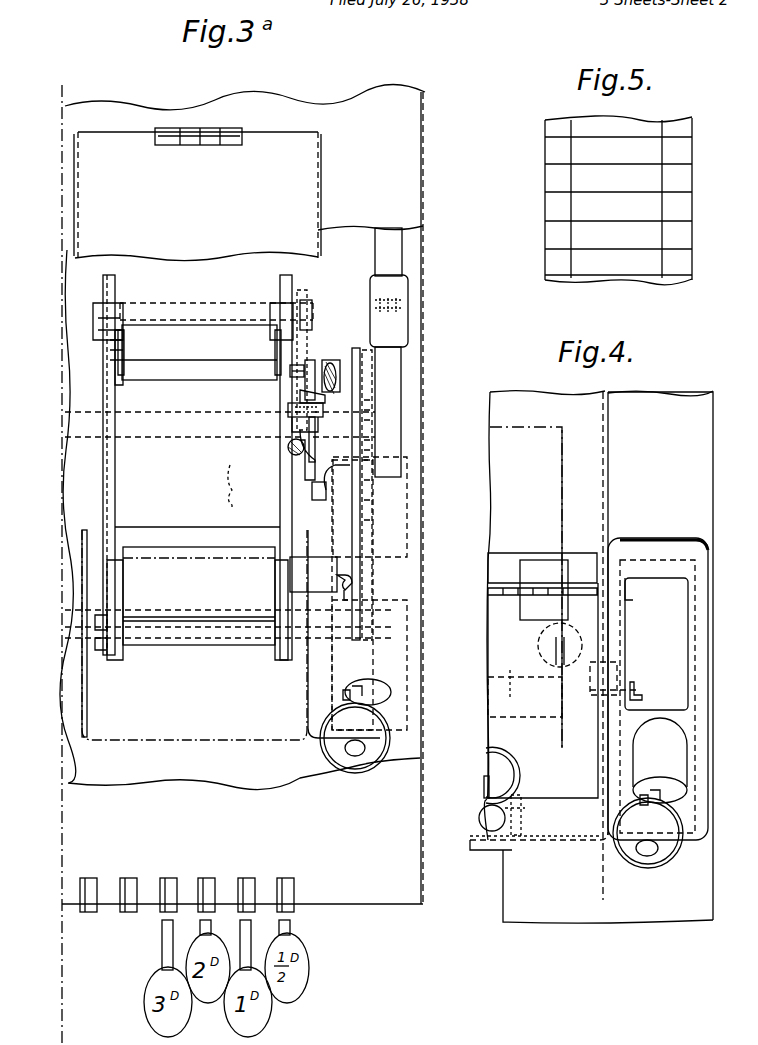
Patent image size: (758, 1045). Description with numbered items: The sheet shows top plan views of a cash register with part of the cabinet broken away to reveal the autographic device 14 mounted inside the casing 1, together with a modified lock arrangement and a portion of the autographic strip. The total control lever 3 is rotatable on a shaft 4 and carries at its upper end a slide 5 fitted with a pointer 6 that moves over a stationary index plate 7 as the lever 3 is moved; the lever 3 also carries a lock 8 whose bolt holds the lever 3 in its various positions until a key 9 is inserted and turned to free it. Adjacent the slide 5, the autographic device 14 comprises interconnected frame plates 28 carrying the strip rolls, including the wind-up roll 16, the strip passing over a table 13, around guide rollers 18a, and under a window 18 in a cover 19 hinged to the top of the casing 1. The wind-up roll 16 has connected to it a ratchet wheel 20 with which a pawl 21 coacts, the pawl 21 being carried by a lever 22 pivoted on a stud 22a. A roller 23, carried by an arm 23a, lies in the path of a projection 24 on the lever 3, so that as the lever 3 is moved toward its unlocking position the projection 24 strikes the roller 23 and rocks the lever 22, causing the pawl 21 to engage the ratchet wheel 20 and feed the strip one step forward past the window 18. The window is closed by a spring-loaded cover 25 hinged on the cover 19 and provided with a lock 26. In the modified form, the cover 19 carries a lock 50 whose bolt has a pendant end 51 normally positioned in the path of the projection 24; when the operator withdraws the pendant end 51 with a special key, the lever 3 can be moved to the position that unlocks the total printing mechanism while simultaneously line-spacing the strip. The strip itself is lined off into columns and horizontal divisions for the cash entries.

In FIG. 3A, the casing 1 is at (363, 128).
In FIG. 4, the casing 1 is at (688, 481).
In FIG. 3A, the total control lever 3 is at (373, 578).
In FIG. 3A, the shaft 4 is at (340, 365).
In FIG. 3A, the slide 5 is at (383, 660).
In FIG. 3A, the pointer 6 is at (345, 592).
In FIG. 4, the pointer 6 is at (642, 696).
In FIG. 4, the index plate 7 is at (672, 634).
In FIG. 3A, the lock 8 is at (390, 690).
In FIG. 4, the lock 8 is at (665, 797).
In FIG. 3A, the key 9 is at (353, 758).
In FIG. 4, the key 9 is at (657, 856).
In FIG. 3A, the table 13 is at (191, 603).
In FIG. 3A, the autographic device 14 is at (103, 515).
In FIG. 3A, the wind-up roll 16 is at (123, 345).
In FIG. 4, the window 18 is at (525, 685).
In FIG. 3A, the guide rollers 18a is at (227, 368).
In FIG. 3A, the cover 19 is at (197, 194).
In FIG. 4, the cover 19 is at (517, 397).
In FIG. 3A, the ratchet wheel 20 is at (319, 360).
In FIG. 3A, the pawl 21 is at (300, 373).
In FIG. 3A, the lever 22 is at (315, 398).
In FIG. 3A, the stud 22a is at (300, 414).
In FIG. 3A, the roller 23 is at (360, 443).
In FIG. 3A, the arm 23a is at (305, 490).
In FIG. 3A, the projection 24 is at (323, 576).
In FIG. 4, the projection 24 is at (595, 700).
In FIG. 4, the cover 25 is at (557, 770).
In FIG. 4, the lock 26 is at (514, 778).
In FIG. 3A, the frame plates 28 is at (280, 522).
In FIG. 4, the lock 50 is at (540, 637).
In FIG. 4, the pendant end 51 is at (558, 592).